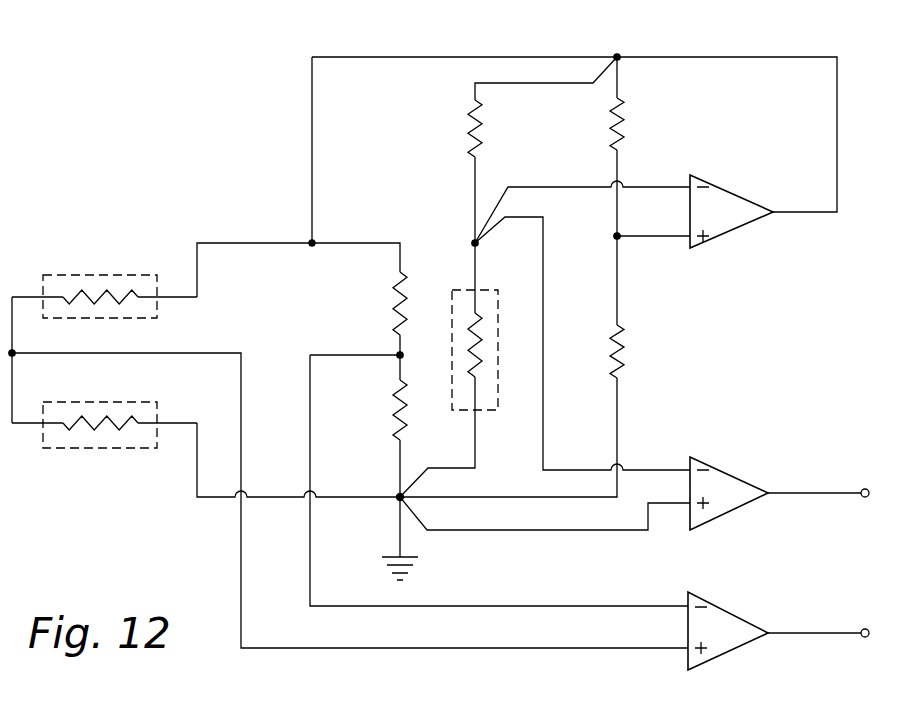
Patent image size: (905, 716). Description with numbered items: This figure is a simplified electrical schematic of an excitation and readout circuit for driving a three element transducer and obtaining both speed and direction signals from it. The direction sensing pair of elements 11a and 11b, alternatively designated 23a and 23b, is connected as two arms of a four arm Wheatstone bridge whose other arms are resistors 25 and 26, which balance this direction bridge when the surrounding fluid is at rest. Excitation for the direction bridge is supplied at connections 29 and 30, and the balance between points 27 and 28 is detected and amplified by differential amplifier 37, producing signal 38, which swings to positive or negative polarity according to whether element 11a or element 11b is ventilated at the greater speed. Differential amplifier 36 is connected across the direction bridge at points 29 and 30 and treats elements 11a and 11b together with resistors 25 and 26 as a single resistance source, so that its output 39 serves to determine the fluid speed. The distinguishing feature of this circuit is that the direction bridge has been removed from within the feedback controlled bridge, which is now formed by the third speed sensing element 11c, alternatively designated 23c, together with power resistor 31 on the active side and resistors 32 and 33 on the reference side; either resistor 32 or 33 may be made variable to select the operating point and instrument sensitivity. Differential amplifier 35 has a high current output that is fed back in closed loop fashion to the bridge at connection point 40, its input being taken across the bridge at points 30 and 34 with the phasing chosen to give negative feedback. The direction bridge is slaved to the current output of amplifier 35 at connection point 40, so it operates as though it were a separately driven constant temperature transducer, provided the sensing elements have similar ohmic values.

The sensing element 11a is at (102, 428).
The sensing element 11b is at (96, 291).
The third speed sensing element 11c is at (478, 343).
The direction sensing element 23a is at (104, 456).
The direction sensing element 23b is at (104, 263).
The third sensor element 23c is at (526, 350).
The resistor 25 is at (393, 300).
The resistor 26 is at (396, 408).
The point 27 is at (403, 355).
The point 28 is at (12, 353).
The connection 29 is at (400, 497).
The connection 30 is at (475, 243).
The power resistor 31 is at (483, 131).
The resistor 32 is at (623, 130).
The resistor 33 is at (623, 358).
The point 34 is at (616, 235).
The differential amplifier 35 is at (737, 195).
The differential amplifier 36 is at (733, 483).
The differential amplifier 37 is at (735, 620).
The signal 38 is at (865, 629).
The output terminal 39 is at (865, 489).
The connection point 40 is at (617, 57).